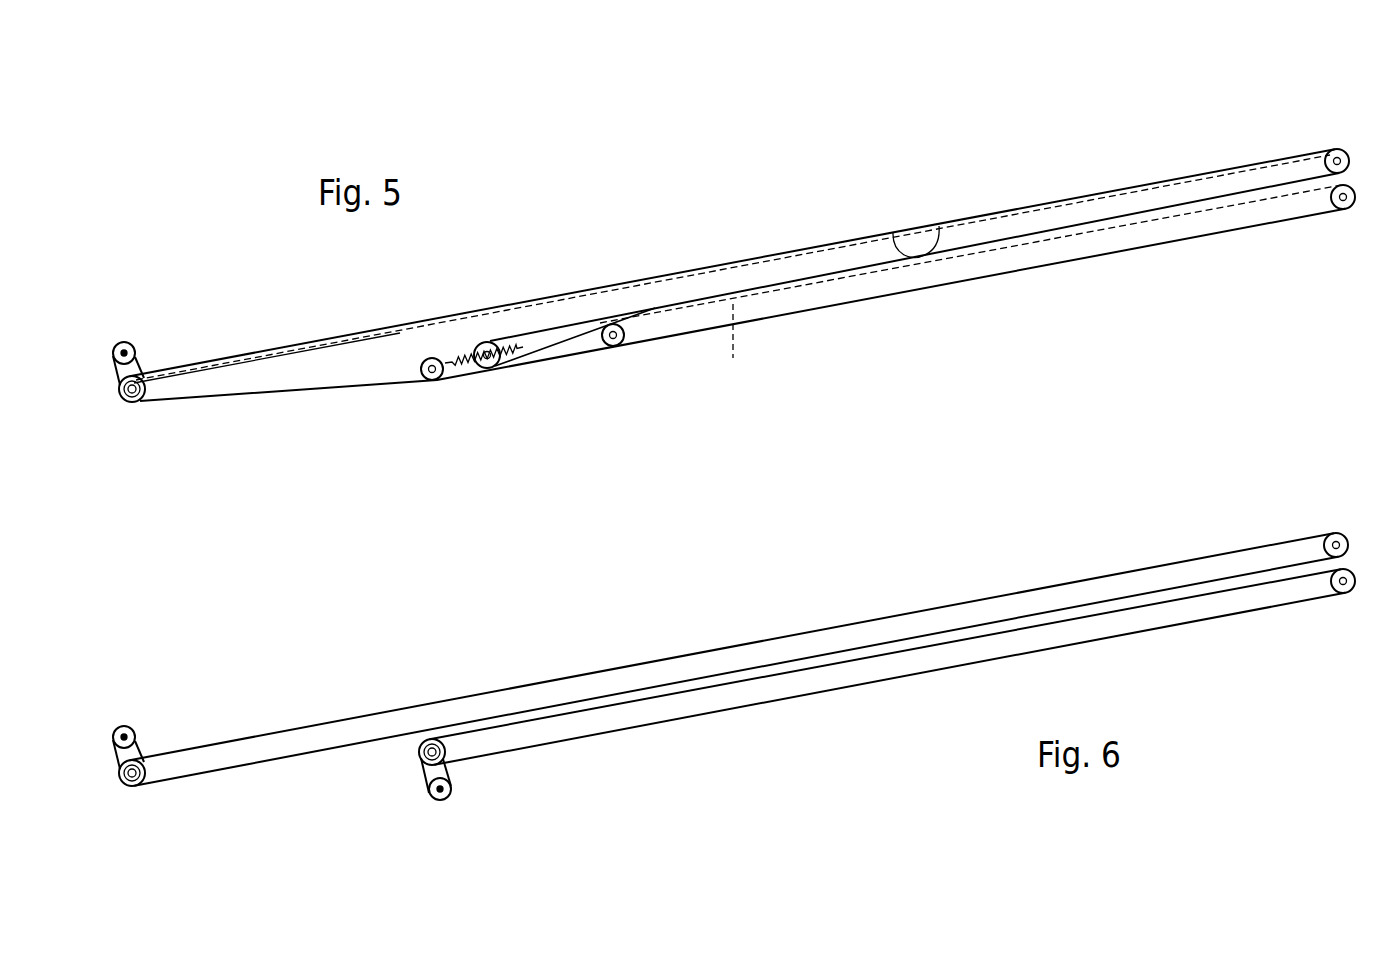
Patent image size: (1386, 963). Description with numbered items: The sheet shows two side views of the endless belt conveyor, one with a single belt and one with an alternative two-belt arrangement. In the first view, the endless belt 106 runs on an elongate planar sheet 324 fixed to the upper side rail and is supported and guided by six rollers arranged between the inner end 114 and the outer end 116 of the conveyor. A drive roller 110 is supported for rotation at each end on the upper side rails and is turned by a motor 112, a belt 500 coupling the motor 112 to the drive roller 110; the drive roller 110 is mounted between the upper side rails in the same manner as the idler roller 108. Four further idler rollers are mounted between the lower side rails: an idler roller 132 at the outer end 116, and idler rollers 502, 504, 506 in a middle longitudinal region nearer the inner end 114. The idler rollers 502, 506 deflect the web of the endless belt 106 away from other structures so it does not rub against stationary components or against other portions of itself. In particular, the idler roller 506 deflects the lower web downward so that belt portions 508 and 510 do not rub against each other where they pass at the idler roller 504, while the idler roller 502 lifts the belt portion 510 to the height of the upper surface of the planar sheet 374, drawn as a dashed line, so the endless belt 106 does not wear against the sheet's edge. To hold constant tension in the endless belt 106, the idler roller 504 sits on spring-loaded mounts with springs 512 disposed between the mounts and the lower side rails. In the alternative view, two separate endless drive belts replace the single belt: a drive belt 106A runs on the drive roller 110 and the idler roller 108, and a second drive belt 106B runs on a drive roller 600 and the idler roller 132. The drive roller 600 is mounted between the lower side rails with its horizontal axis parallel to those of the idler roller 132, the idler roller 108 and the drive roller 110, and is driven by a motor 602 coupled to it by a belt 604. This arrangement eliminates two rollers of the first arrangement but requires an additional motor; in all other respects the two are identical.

In FIG. 5, the endless belt 106 is at (810, 246).
In FIG. 6, the drive belt 106A is at (686, 655).
In FIG. 6, the second drive belt 106B is at (790, 700).
In FIG. 5, the idler roller 108 is at (1337, 149).
In FIG. 6, the idler roller 108 is at (1336, 533).
In FIG. 5, the drive roller 110 is at (126, 404).
In FIG. 6, the drive roller 110 is at (125, 788).
In FIG. 5, the motor 112 is at (131, 343).
In FIG. 6, the motor 112 is at (127, 726).
In FIG. 5, the inner end 114 is at (131, 288).
In FIG. 5, the outer end 116 is at (1294, 134).
In FIG. 5, the idler roller 132 is at (1340, 210).
In FIG. 6, the idler roller 132 is at (1343, 594).
In FIG. 5, the elongate planar sheet 324 is at (893, 232).
In FIG. 5, the planar sheet 374 is at (733, 358).
In FIG. 5, the belt 500 is at (140, 368).
In FIG. 6, the belt 500 is at (142, 758).
In FIG. 5, the idler roller 502 is at (618, 346).
In FIG. 5, the idler roller 504 is at (484, 368).
In FIG. 5, the idler roller 506 is at (427, 380).
In FIG. 5, the belt portion 508 is at (551, 370).
In FIG. 5, the belt portion 510 is at (545, 340).
In FIG. 5, the springs 512 is at (512, 340).
In FIG. 6, the drive roller 600 is at (420, 758).
In FIG. 6, the motor 602 is at (448, 800).
In FIG. 6, the belt 604 is at (446, 763).